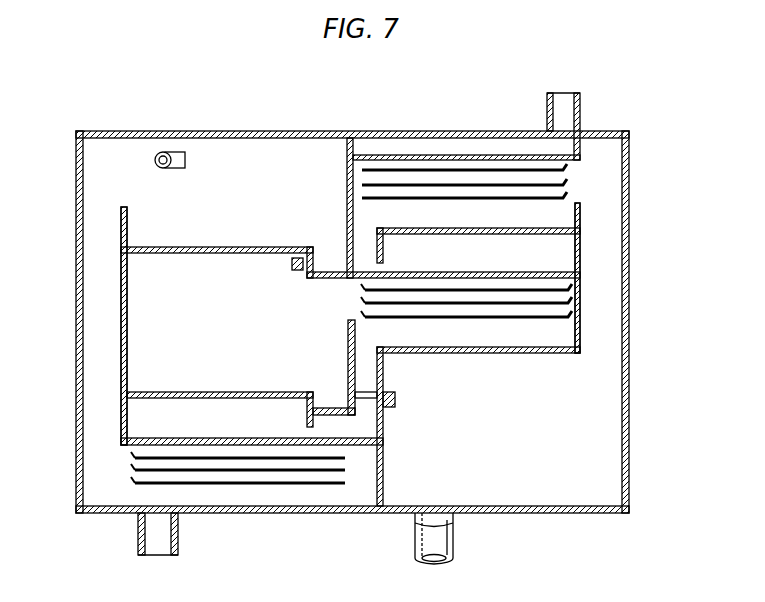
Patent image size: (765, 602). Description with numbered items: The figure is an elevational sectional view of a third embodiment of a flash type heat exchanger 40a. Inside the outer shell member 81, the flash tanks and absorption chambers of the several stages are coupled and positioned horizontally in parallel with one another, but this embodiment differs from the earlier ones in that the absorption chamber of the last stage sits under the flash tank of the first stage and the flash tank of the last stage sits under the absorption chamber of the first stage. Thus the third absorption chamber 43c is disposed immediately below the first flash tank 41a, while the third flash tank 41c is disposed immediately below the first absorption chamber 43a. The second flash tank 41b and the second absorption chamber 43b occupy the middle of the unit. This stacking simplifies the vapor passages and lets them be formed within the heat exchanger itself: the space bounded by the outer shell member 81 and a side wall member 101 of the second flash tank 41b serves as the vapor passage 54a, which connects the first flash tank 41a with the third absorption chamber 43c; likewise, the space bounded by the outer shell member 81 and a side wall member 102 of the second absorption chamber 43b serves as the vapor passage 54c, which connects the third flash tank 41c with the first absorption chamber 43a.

The heat exchanger 40a is at (227, 114).
The first flash tank 41a is at (300, 145).
The second flash tank 41b is at (178, 362).
The third flash tank 41c is at (571, 433).
The first absorption chamber 43a is at (385, 208).
The second absorption chamber 43b is at (453, 333).
The third absorption chamber 43c is at (256, 497).
The vapor passage 54a is at (105, 312).
The vapor passage 54c is at (603, 240).
The outer shell member 81 is at (77, 262).
The side wall member 101 is at (127, 300).
The side wall member 102 is at (578, 327).